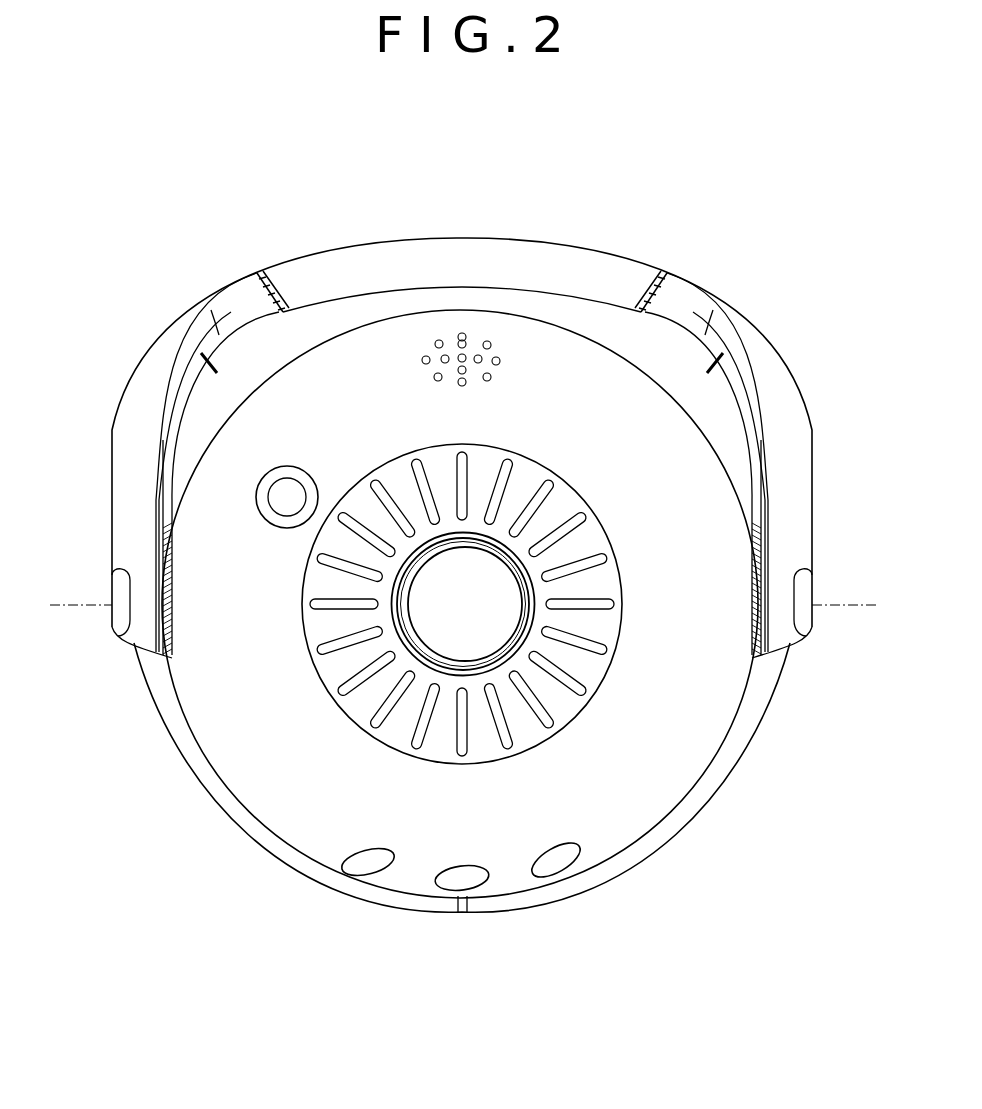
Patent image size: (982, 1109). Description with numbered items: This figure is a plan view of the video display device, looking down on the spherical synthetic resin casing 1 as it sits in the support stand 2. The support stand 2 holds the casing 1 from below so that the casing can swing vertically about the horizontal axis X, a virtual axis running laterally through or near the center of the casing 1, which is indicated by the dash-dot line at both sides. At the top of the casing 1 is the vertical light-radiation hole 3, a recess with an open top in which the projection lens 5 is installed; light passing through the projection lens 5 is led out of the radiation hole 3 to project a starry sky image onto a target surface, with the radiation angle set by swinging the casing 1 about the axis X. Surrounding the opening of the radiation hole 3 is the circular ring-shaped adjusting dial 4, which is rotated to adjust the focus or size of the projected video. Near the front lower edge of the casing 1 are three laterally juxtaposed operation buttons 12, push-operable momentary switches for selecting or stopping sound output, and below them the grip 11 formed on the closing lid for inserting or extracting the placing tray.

The casing 1 is at (378, 316).
The support stand 2 is at (530, 241).
The light-radiation hole 3 is at (413, 655).
The adjusting dial 4 is at (530, 476).
The projection lens 5 is at (470, 615).
The grip 11 is at (460, 905).
The operation buttons 12 is at (360, 865).
The horizontal axis X is at (835, 607).